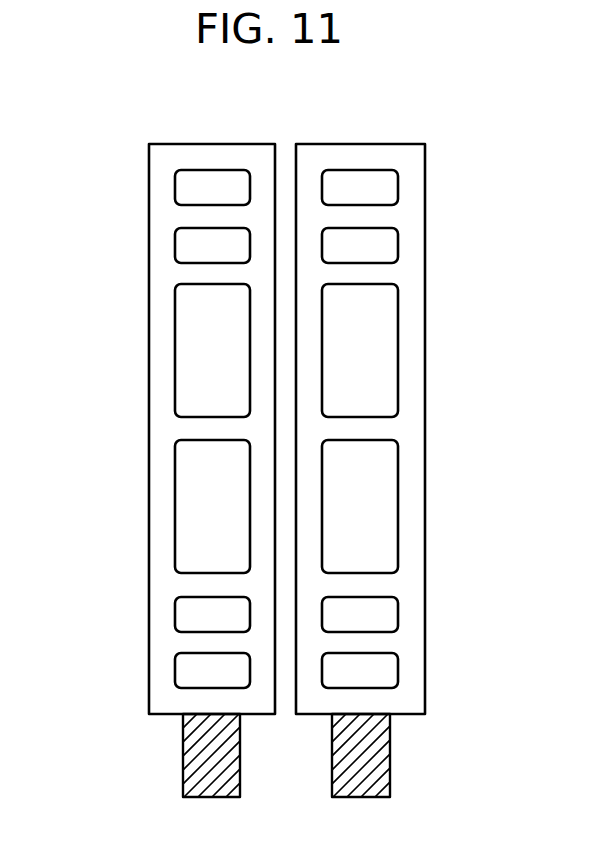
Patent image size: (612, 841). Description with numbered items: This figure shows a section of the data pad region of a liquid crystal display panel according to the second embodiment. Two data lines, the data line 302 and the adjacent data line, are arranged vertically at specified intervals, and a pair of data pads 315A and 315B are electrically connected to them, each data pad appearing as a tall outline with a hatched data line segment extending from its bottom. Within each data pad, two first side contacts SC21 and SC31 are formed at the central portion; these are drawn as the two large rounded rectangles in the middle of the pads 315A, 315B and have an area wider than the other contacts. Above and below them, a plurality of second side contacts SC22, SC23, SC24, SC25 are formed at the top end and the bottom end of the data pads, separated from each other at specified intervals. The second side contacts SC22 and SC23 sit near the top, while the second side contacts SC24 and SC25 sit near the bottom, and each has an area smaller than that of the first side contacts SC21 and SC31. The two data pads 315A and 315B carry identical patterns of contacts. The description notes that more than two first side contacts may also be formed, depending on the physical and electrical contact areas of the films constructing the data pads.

The data pad 315A is at (148, 510).
The data pad 315B is at (427, 527).
The first side contact SC21 is at (190, 360).
The second side contact SC22 is at (190, 190).
The second side contact SC23 is at (190, 244).
The second side contact SC24 is at (190, 617).
The second side contact SC25 is at (190, 670).
The first side contact SC31 is at (190, 474).
The data line 302 is at (195, 750).